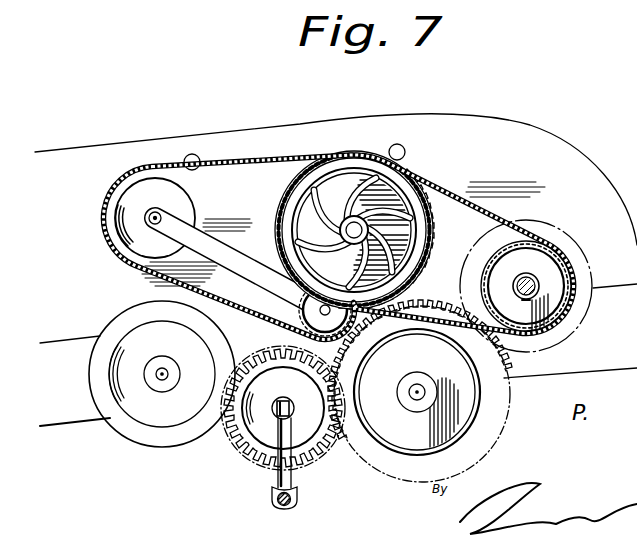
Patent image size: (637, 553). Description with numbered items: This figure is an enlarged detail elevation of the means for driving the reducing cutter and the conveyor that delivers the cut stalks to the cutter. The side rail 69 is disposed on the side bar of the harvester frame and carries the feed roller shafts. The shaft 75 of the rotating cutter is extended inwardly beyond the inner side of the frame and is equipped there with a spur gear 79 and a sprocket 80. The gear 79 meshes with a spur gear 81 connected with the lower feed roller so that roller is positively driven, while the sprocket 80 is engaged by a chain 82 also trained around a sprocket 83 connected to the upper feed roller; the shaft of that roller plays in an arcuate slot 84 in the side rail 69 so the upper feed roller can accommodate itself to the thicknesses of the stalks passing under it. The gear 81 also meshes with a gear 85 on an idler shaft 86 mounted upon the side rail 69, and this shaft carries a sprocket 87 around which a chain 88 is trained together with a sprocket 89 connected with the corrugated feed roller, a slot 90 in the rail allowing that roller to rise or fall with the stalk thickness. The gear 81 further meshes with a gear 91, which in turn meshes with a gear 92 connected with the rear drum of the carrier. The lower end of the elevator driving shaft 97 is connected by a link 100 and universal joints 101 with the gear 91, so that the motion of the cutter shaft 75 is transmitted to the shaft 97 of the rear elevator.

The side rail 69 is at (282, 137).
The shaft 75 is at (534, 290).
The spur gear 79 is at (493, 237).
The sprocket 80 is at (550, 325).
The spur gear 81 is at (462, 403).
The chain 82 is at (460, 192).
The sprocket 83 is at (423, 230).
The arcuate slot 84 is at (410, 152).
The gear 85 is at (313, 349).
The idler shaft 86 is at (237, 261).
The sprocket 87 is at (300, 311).
The chain 88 is at (230, 203).
The sprocket 89 is at (115, 193).
The slot 90 is at (200, 161).
The gear 91 is at (305, 435).
The gear 92 is at (163, 418).
The shaft 97 is at (284, 506).
The link 100 is at (287, 440).
The universal joint 101 is at (276, 504).